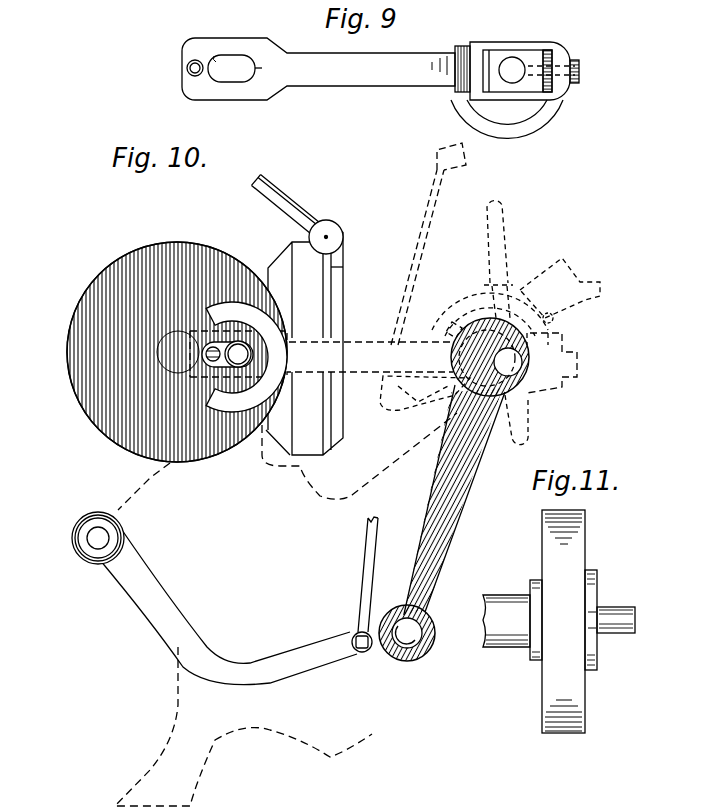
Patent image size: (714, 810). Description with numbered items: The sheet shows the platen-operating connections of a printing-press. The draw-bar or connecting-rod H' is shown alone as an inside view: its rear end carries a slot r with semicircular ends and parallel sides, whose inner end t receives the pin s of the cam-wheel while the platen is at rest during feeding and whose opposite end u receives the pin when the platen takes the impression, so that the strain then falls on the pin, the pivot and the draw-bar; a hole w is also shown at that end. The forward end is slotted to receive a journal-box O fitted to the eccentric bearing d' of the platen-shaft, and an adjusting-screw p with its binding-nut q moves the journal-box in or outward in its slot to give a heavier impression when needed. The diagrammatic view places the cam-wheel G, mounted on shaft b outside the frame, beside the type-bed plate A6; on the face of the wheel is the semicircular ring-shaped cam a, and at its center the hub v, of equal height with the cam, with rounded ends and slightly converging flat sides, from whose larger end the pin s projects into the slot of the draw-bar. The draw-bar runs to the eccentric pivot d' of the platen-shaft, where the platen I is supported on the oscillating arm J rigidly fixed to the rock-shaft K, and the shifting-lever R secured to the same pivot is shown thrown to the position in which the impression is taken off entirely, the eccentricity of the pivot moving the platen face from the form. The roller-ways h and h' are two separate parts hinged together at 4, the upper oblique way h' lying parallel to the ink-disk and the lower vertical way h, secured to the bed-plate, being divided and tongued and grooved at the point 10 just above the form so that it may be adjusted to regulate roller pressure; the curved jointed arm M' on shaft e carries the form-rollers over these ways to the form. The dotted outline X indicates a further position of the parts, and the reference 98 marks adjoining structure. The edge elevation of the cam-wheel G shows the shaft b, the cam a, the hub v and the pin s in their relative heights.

In FIG. 9, the connecting-rod H' is at (372, 88).
In FIG. 10, the connecting-rod H' is at (398, 370).
In FIG. 9, the hole w is at (186, 71).
In FIG. 9, the slot r is at (231, 68).
In FIG. 9, the slot end u is at (216, 60).
In FIG. 9, the slot inner end t is at (255, 69).
In FIG. 9, the journal-box O is at (522, 50).
In FIG. 9, the binding-nut q is at (552, 58).
In FIG. 10, the binding-nut q is at (234, 318).
In FIG. 9, the adjusting-screw p is at (579, 70).
In FIG. 10, the type-bed plate A6 is at (304, 343).
In FIG. 10, the tongue-and-groove point 10 is at (343, 267).
In FIG. 10, the lower vertical roller-way h is at (346, 265).
In FIG. 10, the upper oblique roller-way h' is at (291, 209).
In FIG. 10, the hinge-joint pivot 4 is at (331, 236).
In FIG. 10, the cam-wheel G is at (86, 350).
In FIG. 11, the cam-wheel G is at (585, 522).
In FIG. 10, the shaft b is at (178, 352).
In FIG. 11, the shaft b is at (510, 602).
In FIG. 10, the pin s is at (227, 354).
In FIG. 11, the pin s is at (622, 612).
In FIG. 10, the hub v is at (213, 347).
In FIG. 11, the hub v is at (590, 620).
In FIG. 10, the dashed lever X is at (435, 197).
In FIG. 10, the shifting-lever R is at (496, 222).
In FIG. 10, the platen I is at (572, 277).
In FIG. 10, the stops 98 is at (556, 320).
In FIG. 10, the oscillating arm J is at (448, 492).
In FIG. 10, the eccentric bearing d' is at (507, 358).
In FIG. 10, the rock-shaft K is at (416, 645).
In FIG. 10, the curved jointed arm M' is at (239, 601).
In FIG. 10, the shaft e is at (98, 538).
In FIG. 11, the cam a is at (597, 648).